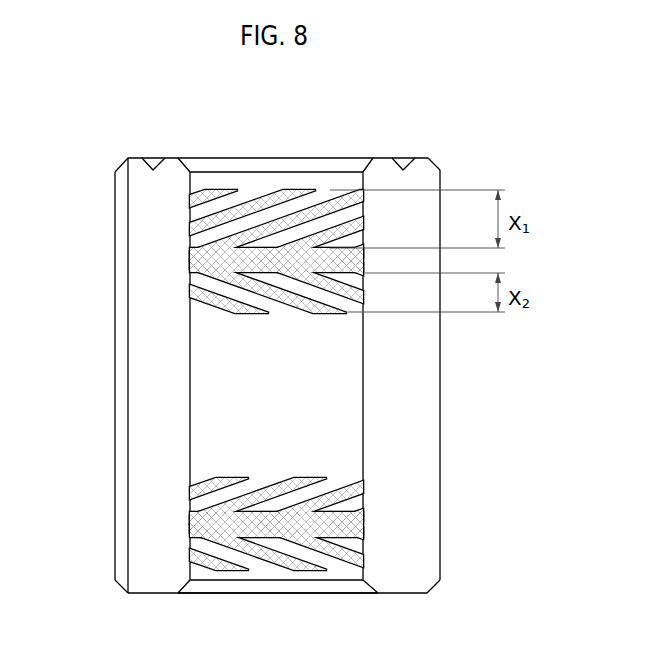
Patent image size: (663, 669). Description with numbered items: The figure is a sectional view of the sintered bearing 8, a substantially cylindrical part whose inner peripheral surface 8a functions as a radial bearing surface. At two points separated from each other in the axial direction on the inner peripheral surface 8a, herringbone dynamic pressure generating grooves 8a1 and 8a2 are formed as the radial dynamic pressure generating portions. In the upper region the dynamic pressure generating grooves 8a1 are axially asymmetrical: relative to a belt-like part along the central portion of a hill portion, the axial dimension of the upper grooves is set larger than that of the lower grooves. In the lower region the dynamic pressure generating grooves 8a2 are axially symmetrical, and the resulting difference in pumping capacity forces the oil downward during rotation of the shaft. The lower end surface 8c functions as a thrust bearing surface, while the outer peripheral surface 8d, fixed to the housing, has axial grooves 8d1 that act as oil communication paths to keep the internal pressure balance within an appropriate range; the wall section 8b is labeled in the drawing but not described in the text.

The sintered bearing 8 is at (92, 185).
The inner peripheral surface 8a is at (352, 380).
The dynamic pressure generating grooves 8a1 is at (240, 197).
The dynamic pressure generating grooves 8a2 is at (258, 481).
The side wall portion 8b is at (134, 158).
The lower end surface 8c is at (402, 594).
The outer peripheral surface 8d is at (115, 331).
The axial grooves 8d1 is at (128, 423).